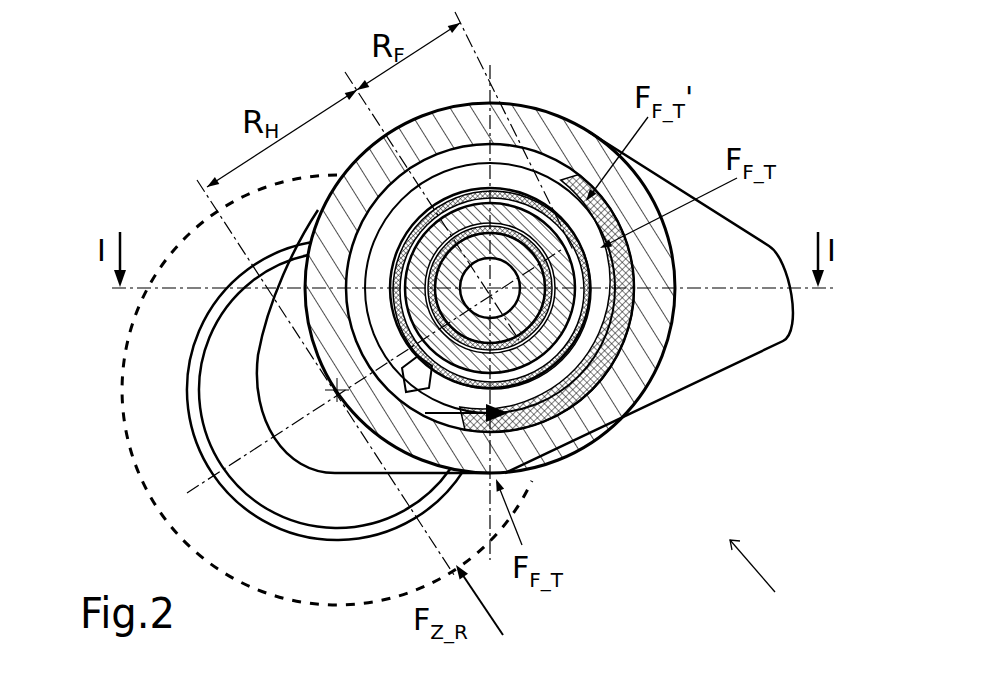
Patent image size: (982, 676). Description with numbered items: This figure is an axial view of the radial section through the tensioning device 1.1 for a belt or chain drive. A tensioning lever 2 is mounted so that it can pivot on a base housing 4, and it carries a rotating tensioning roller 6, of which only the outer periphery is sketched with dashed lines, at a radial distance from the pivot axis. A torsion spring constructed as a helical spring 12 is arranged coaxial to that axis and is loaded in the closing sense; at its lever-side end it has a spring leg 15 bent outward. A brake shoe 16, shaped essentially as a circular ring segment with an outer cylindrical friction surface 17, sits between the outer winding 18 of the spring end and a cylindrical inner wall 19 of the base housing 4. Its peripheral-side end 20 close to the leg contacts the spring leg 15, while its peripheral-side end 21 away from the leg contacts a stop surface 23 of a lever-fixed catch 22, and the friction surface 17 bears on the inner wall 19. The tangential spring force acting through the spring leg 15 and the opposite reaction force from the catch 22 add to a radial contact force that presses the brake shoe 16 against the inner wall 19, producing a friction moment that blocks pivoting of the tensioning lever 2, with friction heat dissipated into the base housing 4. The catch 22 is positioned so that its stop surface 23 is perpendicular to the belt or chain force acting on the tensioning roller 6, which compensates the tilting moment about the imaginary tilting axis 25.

The tensioning device 1.1 is at (770, 583).
The tensioning lever 2 is at (741, 307).
The base housing 4 is at (655, 262).
The tensioning roller 6 is at (181, 237).
The helical spring 12 is at (655, 318).
The spring leg 15 is at (563, 427).
The brake shoe 16 is at (598, 218).
The outer cylindrical friction surface 17 is at (755, 398).
The outer winding 18 is at (633, 322).
The cylindrical inner wall 19 is at (630, 350).
The peripheral-side end close to the leg 20 is at (550, 447).
The peripheral-side end away from the leg 21 is at (587, 390).
The lever-fixed catch 22 is at (590, 185).
The stop surface 23 is at (540, 182).
The tilting axis 25 is at (245, 450).